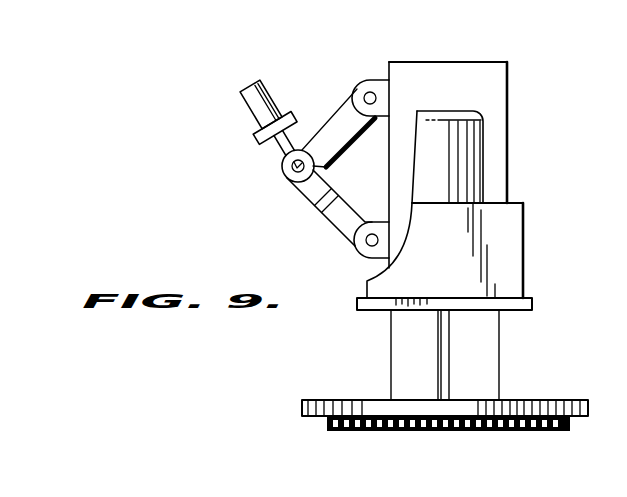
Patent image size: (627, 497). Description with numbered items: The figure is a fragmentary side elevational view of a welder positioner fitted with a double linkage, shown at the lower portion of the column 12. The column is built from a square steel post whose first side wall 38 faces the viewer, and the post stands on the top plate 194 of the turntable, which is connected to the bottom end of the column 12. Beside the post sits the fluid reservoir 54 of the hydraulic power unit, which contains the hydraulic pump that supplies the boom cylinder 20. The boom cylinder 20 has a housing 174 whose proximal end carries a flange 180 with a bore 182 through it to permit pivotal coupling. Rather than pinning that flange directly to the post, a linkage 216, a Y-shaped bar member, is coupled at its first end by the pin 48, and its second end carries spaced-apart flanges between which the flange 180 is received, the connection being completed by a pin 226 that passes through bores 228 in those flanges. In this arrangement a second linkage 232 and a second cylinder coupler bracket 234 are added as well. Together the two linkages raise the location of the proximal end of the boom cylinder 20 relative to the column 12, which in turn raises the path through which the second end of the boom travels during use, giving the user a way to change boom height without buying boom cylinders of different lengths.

The column 12 is at (497, 102).
The boom cylinder 20 is at (265, 84).
The first side wall 38 is at (468, 70).
The pin 48 is at (378, 240).
The fluid reservoir 54 is at (518, 260).
The housing 174 is at (250, 101).
The flange 180 is at (275, 146).
The bore 182 is at (292, 173).
The top plate 194 is at (368, 400).
The linkage 216 is at (352, 228).
The pin 226 is at (329, 159).
The bores 228 is at (298, 188).
The second linkage 232 is at (335, 111).
The second cylinder coupler bracket 234 is at (375, 84).